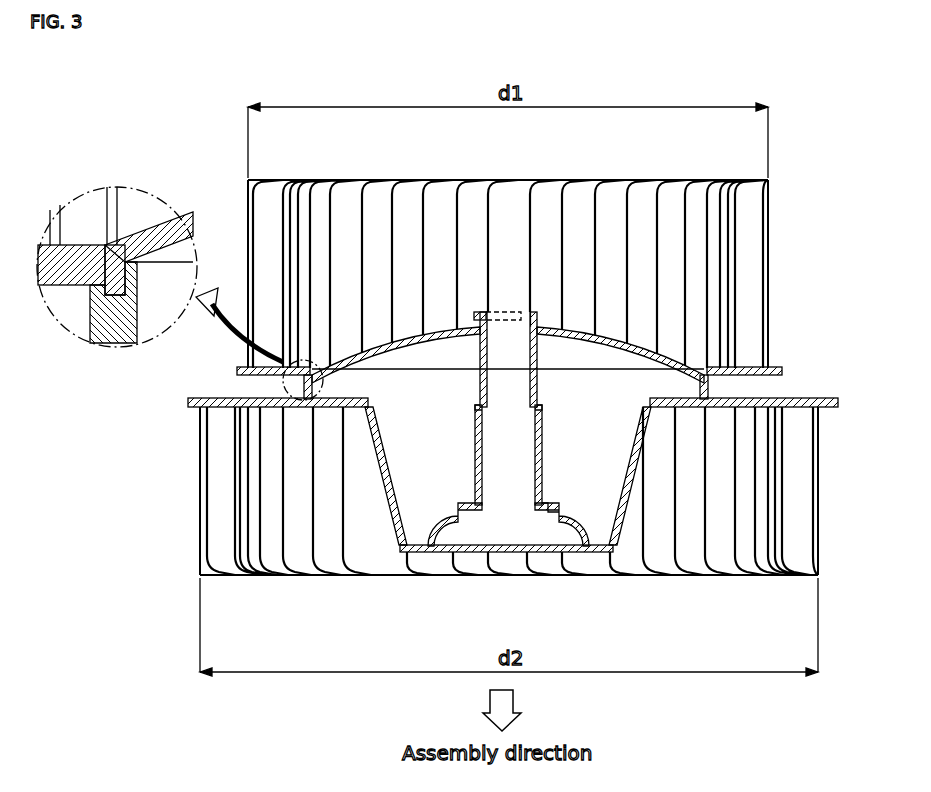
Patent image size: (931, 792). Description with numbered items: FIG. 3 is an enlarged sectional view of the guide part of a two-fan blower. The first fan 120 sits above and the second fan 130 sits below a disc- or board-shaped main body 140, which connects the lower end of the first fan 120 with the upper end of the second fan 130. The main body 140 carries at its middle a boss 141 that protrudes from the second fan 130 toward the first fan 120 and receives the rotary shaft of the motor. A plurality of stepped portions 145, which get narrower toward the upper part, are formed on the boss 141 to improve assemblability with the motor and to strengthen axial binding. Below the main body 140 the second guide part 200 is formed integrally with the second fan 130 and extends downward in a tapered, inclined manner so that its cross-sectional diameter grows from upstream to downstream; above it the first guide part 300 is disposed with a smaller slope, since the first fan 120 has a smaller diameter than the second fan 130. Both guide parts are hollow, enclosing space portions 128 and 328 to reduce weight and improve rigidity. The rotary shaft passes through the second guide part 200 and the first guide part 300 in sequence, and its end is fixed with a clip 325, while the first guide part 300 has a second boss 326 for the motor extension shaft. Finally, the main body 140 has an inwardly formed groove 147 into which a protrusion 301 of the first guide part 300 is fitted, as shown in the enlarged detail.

The first fan 120 is at (790, 258).
The space portion 128 is at (436, 477).
The second fan 130 is at (829, 532).
The main body 140 is at (758, 376).
The boss 141 is at (538, 478).
The stepped portion 145 is at (538, 421).
The groove 147 is at (92, 295).
The second guide part 200 is at (636, 470).
The first guide part 300 is at (397, 349).
The protrusion 301 is at (122, 284).
The clip 325 is at (479, 316).
The second boss 326 is at (530, 348).
The space portion 328 is at (446, 357).